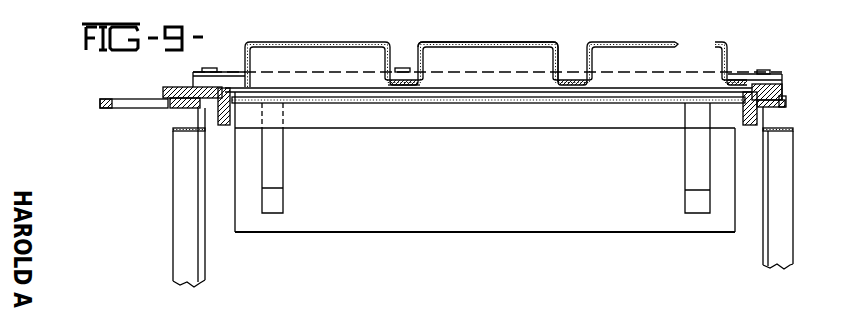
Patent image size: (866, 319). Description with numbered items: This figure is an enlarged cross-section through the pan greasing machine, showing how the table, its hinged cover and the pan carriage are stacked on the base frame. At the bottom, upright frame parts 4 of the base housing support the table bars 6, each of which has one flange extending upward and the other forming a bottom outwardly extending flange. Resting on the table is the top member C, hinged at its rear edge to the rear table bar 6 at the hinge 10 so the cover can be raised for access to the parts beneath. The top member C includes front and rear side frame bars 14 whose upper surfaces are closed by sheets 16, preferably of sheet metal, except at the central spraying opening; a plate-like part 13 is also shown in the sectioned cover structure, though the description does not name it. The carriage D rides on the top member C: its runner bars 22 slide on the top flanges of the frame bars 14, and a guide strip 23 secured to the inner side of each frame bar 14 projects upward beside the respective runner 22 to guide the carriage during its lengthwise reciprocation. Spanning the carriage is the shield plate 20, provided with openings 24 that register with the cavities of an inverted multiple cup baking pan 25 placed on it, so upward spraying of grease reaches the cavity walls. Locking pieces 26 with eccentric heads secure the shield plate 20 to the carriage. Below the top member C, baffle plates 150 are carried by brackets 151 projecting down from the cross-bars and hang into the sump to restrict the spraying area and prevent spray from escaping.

The frame parts 4 is at (177, 193).
The bars 6 is at (188, 130).
The hinge 10 is at (786, 107).
The plate 13 is at (475, 129).
The side frame bars 14 is at (223, 126).
The sheets 16 is at (637, 104).
The shield plate 20 is at (400, 88).
The runner bars 22 is at (783, 92).
The guide strip 23 is at (240, 98).
The openings 24 is at (508, 87).
The multiple cup baking pan 25 is at (478, 21).
The locking pieces 26 is at (401, 69).
The baffle plates 150 is at (477, 229).
The brackets 151 is at (695, 181).
The top member C is at (440, 107).
The carriage D is at (744, 68).